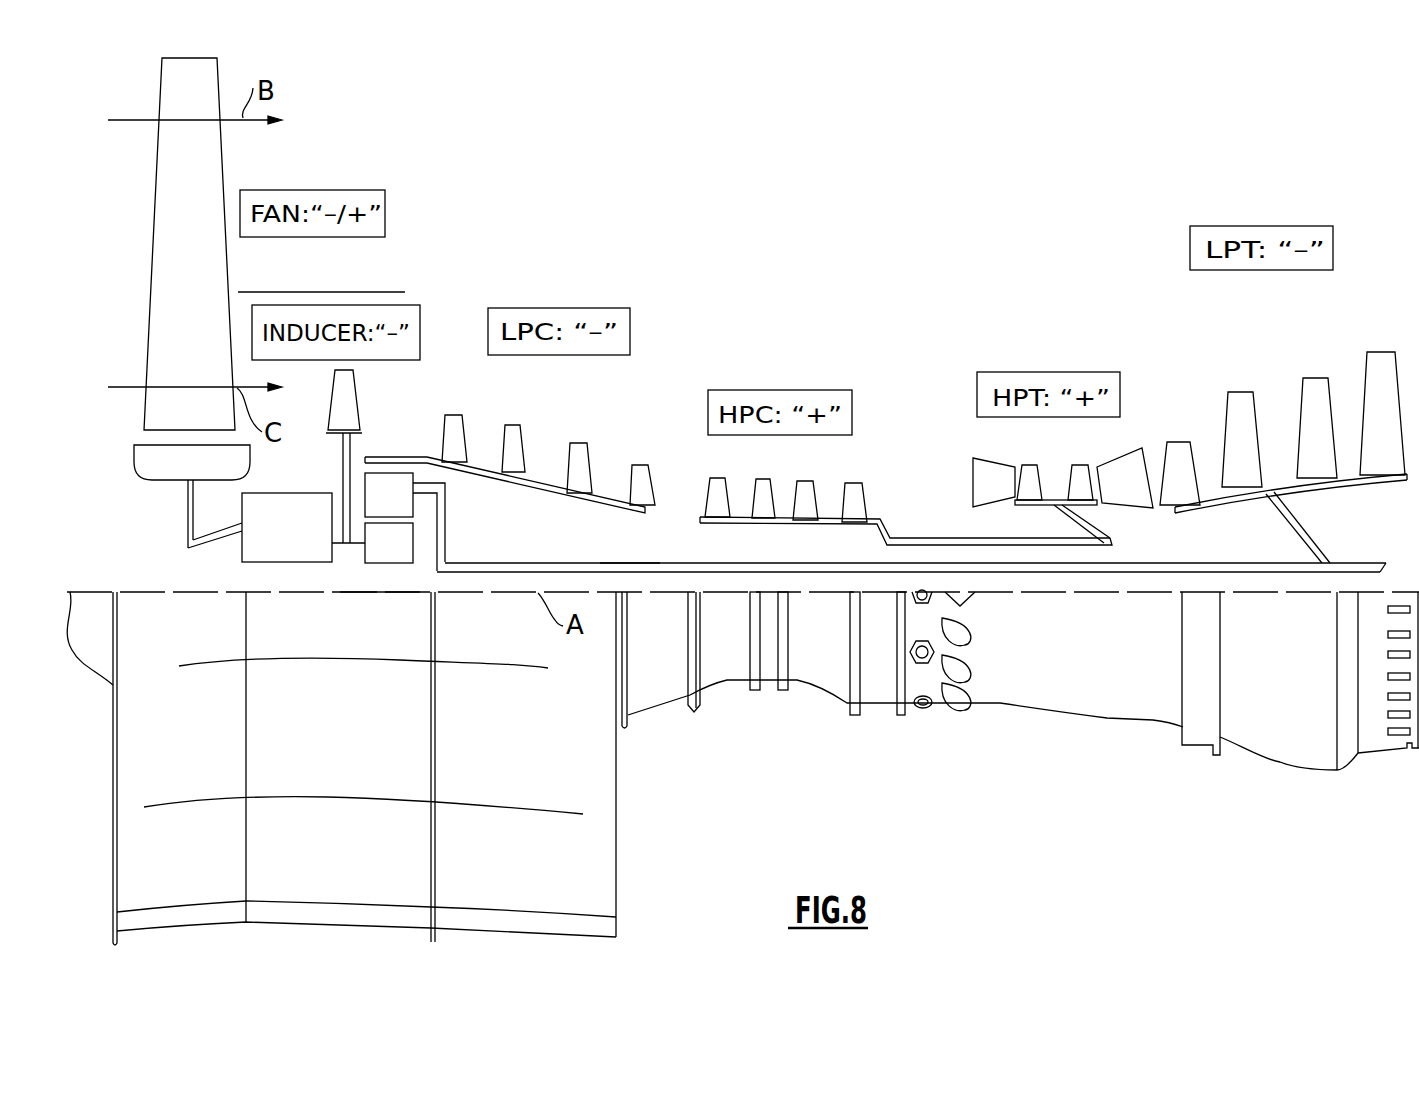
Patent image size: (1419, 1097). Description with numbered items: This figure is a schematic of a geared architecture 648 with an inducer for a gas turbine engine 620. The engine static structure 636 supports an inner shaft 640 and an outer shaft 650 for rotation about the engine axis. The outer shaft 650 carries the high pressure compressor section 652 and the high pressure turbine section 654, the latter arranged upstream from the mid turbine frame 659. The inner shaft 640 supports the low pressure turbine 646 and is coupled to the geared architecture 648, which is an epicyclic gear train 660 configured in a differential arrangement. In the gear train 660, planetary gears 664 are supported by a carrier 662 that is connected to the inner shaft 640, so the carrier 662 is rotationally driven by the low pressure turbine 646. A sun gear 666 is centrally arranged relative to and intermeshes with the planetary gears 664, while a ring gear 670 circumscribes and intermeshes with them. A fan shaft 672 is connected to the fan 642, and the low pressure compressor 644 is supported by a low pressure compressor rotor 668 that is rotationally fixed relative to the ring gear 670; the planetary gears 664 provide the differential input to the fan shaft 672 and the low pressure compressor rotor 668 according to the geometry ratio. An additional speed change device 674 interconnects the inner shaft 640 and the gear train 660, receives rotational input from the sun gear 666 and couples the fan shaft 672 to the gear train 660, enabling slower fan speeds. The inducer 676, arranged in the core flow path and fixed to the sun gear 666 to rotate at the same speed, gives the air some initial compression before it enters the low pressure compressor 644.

The engine 620 is at (845, 206).
The engine static structure 636 is at (966, 428).
The inner shaft 640 is at (631, 572).
The fan 642 is at (207, 180).
The low pressure compressor 644 is at (438, 412).
The low pressure turbine 646 is at (1153, 320).
The geared architecture 648 is at (430, 378).
The outer shaft 650 is at (1018, 548).
The high pressure compressor section 652 is at (697, 385).
The high pressure turbine section 654 is at (1098, 365).
The mid turbine frame 659 is at (1130, 450).
The epicyclic gear train 660 is at (376, 605).
The carrier 662 is at (445, 535).
The planetary gears 664 is at (410, 482).
The sun gear 666 is at (400, 560).
The low pressure compressor rotor 668 is at (553, 488).
The ring gear 670 is at (375, 455).
The fan shaft 672 is at (186, 514).
The speed change device 674 is at (308, 556).
The inducer 676 is at (328, 415).